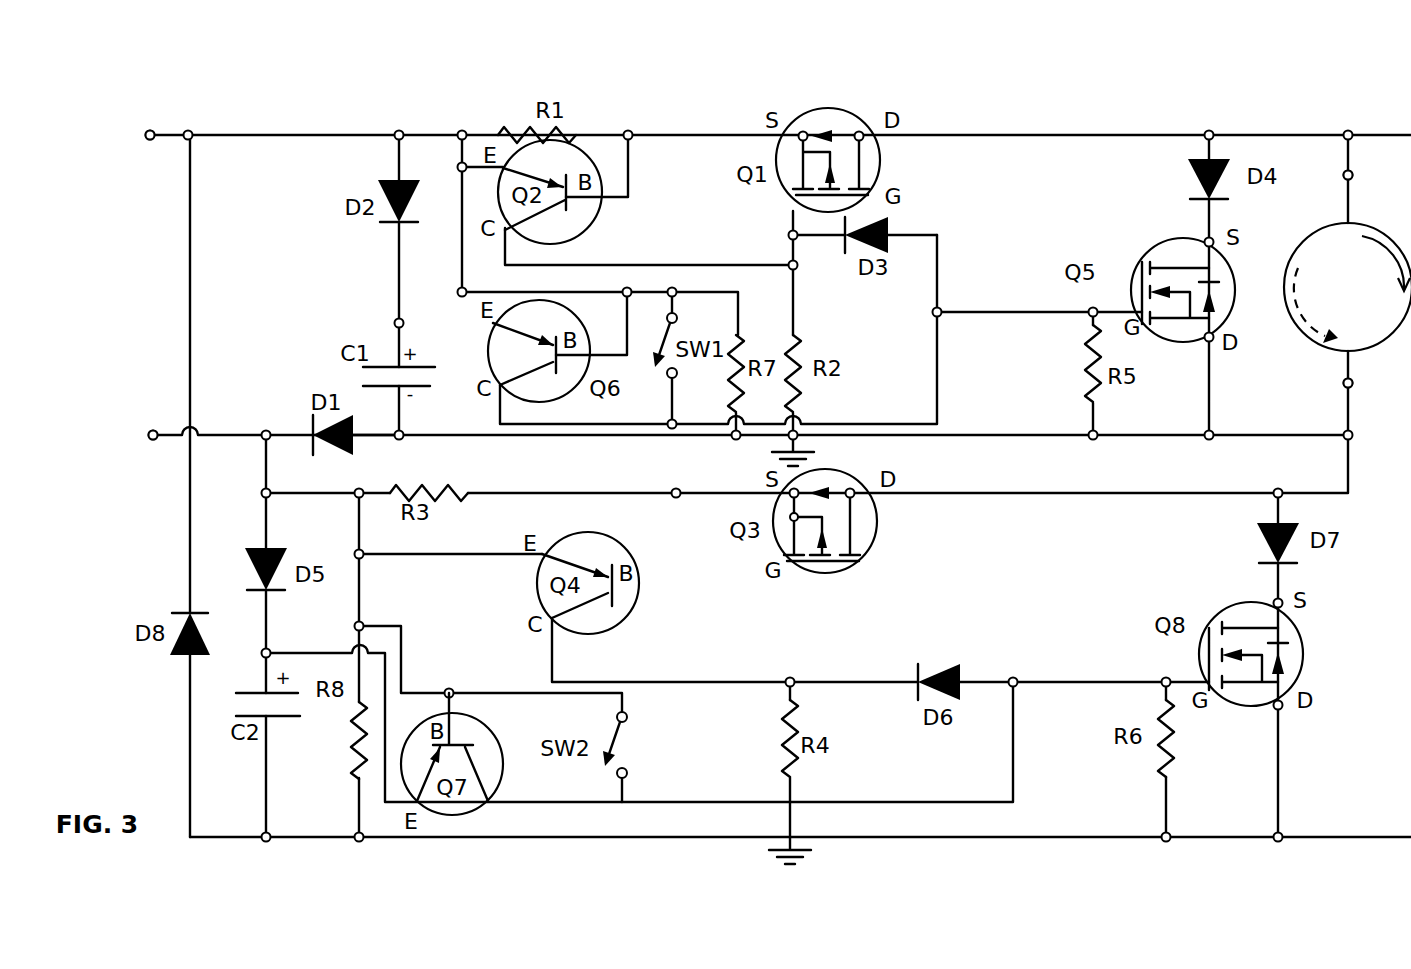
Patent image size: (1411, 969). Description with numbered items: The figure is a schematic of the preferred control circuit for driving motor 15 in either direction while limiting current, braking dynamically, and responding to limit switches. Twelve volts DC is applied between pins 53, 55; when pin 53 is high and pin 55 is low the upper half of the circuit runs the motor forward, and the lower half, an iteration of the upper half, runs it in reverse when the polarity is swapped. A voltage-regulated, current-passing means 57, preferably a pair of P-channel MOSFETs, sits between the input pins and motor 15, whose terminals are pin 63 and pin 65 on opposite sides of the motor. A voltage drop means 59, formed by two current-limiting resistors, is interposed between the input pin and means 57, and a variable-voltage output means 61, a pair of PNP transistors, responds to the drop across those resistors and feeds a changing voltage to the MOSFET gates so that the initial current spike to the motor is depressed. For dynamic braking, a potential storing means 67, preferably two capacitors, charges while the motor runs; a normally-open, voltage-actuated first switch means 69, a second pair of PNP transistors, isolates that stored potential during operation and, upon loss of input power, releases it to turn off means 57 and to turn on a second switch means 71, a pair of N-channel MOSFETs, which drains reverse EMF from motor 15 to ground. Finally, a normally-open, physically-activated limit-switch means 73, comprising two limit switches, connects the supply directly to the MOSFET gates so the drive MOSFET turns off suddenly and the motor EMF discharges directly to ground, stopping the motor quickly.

The motor 15 is at (1333, 261).
The pin 53 is at (133, 136).
The pin 55 is at (134, 436).
The voltage-regulated, current-passing means 57 is at (800, 100).
The voltage drop means 59 is at (498, 98).
The variable-voltage output means 61 is at (612, 255).
The pin 63 is at (1372, 175).
The pin 65 is at (1372, 383).
The means for storing a potential 67 is at (370, 332).
The first switch means 69 is at (472, 372).
The second switch means 71 is at (1140, 235).
The limit-switch means 73 is at (655, 392).